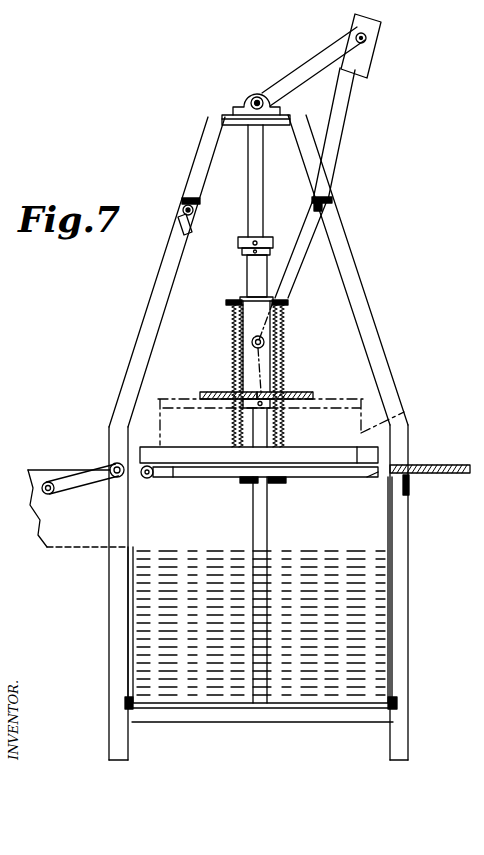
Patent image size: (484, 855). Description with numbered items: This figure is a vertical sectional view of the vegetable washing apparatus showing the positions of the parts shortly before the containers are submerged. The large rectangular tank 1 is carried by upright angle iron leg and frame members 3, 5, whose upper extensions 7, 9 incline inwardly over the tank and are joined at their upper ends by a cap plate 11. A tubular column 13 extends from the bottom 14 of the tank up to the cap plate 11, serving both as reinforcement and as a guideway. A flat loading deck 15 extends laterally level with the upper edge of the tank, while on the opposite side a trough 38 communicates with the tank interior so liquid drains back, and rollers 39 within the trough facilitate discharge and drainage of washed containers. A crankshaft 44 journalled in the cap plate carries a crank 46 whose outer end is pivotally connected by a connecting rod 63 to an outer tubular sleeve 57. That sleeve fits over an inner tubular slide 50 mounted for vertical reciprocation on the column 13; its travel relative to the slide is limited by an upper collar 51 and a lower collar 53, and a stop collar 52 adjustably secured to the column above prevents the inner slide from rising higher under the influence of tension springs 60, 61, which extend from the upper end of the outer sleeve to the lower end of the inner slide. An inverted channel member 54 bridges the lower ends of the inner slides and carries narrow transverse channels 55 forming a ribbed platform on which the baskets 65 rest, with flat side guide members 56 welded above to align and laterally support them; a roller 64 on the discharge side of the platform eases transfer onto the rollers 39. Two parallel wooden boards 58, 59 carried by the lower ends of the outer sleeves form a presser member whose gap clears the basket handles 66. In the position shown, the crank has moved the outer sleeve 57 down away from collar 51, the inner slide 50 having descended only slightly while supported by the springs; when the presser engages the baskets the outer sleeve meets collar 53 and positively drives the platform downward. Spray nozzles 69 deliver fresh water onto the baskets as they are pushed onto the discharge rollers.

The tank 1 is at (127, 606).
The upright angle iron leg and frame member 3 is at (403, 741).
The upright angle iron leg and frame member 5 is at (125, 745).
The upper extension of frame member 7 is at (347, 266).
The upper extension of frame member 9 is at (161, 265).
The cap plate 11 is at (232, 113).
The tubular column 13 is at (260, 183).
The bottom of tank 14 is at (302, 708).
The loading deck 15 is at (443, 474).
The trough 38 is at (45, 470).
The rollers 39 is at (109, 466).
The crankshaft 44 is at (254, 97).
The crank 46 is at (306, 68).
The inner tubular slide 50 is at (246, 272).
The collar 51 is at (241, 253).
The stop collar 52 is at (240, 240).
The collar 53 is at (272, 406).
The inverted channel member 54 is at (266, 484).
The channels 55 is at (195, 478).
The side guide members 56 is at (313, 455).
The outer tubular sleeve 57 is at (243, 324).
The wooden board 58 is at (205, 392).
The wooden board 59 is at (306, 392).
The tension spring 60 is at (234, 342).
The tension spring 61 is at (281, 320).
The connecting rod 63 is at (334, 141).
The roller 64 is at (147, 479).
The baskets 65 is at (398, 425).
The handles 66 is at (284, 368).
The spray nozzles 69 is at (182, 223).